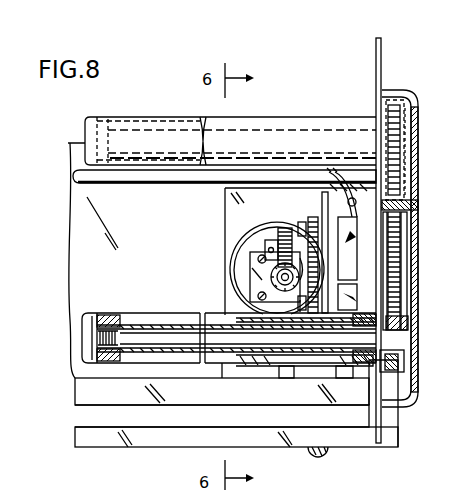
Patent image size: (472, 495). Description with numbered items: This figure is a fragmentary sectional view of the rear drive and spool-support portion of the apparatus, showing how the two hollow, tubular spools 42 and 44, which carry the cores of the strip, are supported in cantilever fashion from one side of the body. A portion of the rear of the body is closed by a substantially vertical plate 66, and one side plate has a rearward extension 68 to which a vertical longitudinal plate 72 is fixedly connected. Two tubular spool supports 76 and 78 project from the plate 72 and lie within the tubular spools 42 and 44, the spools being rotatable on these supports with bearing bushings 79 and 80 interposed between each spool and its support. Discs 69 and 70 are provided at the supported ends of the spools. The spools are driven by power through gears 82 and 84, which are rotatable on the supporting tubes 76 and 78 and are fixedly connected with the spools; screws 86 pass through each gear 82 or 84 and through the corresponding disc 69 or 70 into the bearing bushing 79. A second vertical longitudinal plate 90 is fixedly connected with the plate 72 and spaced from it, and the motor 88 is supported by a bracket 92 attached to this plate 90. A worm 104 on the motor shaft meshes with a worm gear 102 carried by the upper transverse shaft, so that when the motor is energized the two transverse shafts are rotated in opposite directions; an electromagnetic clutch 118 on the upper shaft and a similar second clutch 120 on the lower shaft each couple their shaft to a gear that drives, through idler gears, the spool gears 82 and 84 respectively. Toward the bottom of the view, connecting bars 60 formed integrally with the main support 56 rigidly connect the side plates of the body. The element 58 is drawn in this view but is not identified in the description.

The spool 42 is at (133, 117).
The spool support 76 is at (280, 130).
The disc 69 is at (376, 58).
The gear 82 is at (414, 248).
The clutch 118 is at (352, 233).
The portion of side plate 68 is at (418, 205).
The vertical longitudinal plate 72 is at (402, 262).
The gear 84 is at (416, 303).
The second clutch 120 is at (408, 319).
The screws 86 is at (399, 364).
The bearing bushing 79 is at (350, 322).
The disc 70 is at (338, 440).
The main support 56 is at (168, 440).
The gap 58 is at (92, 414).
The connecting bars 60 is at (116, 400).
The bearing bushing 80 is at (108, 313).
The spool 44 is at (133, 315).
The spool support 78 is at (160, 325).
The vertical plate 66 is at (225, 218).
The motor 88 is at (240, 252).
The bracket 92 is at (253, 273).
The worm 104 is at (273, 285).
The worm gear 102 is at (283, 228).
The vertical longitudinal plate 90 is at (335, 212).